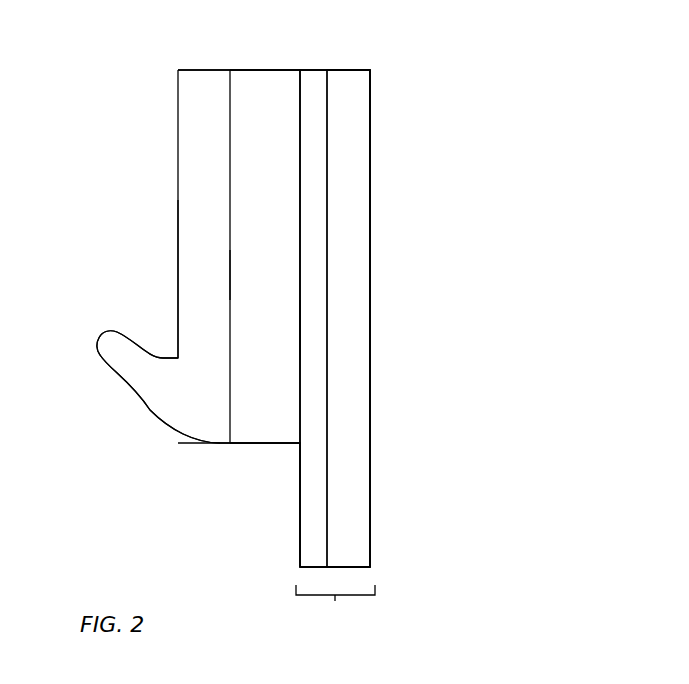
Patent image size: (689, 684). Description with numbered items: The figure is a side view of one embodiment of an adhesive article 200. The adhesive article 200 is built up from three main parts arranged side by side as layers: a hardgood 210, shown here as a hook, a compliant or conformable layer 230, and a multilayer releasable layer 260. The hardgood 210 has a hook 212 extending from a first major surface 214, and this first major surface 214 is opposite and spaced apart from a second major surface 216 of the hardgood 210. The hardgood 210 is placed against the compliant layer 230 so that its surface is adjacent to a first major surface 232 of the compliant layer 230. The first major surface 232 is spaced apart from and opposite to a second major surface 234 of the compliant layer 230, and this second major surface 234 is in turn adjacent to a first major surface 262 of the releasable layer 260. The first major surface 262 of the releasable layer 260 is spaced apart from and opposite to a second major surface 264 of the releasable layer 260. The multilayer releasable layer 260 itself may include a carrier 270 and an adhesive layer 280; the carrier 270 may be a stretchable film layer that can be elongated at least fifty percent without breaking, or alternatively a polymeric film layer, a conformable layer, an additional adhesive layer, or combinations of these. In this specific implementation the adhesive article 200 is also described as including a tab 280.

The adhesive article 200 is at (492, 173).
The hardgood 210 is at (190, 100).
The hook 212 is at (117, 363).
The first major surface 214 is at (178, 228).
The second major surface 216 is at (230, 167).
The compliant layer 230 is at (263, 85).
The first major surface of compliant layer 232 is at (230, 290).
The second major surface of compliant layer 234 is at (300, 352).
The multilayer releasable layer 260 is at (335, 353).
The first major surface of releasable layer 262 is at (300, 187).
The second major surface of releasable layer 264 is at (370, 107).
The carrier 270 is at (318, 85).
The adhesive layer 280 is at (355, 482).